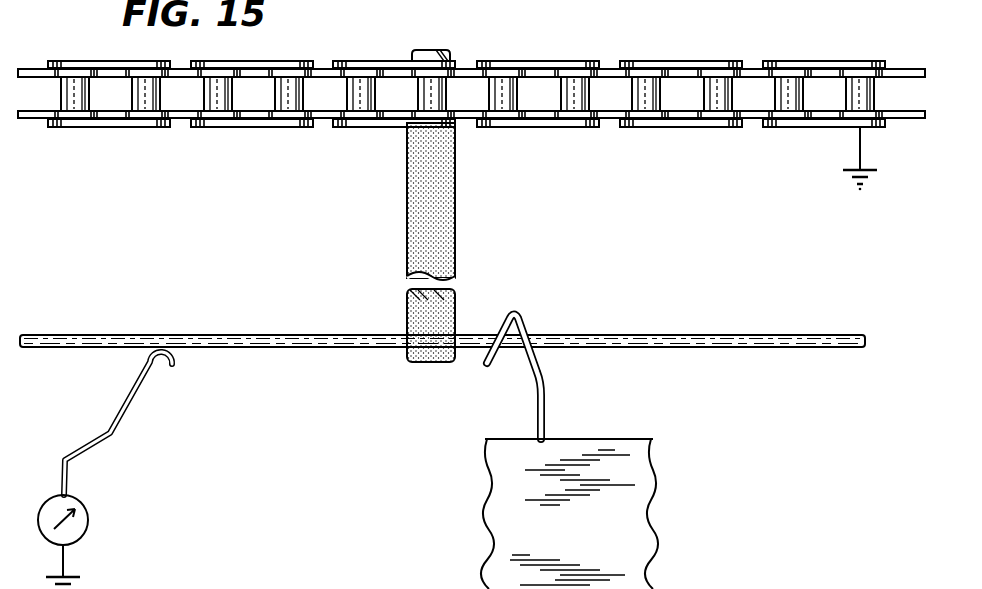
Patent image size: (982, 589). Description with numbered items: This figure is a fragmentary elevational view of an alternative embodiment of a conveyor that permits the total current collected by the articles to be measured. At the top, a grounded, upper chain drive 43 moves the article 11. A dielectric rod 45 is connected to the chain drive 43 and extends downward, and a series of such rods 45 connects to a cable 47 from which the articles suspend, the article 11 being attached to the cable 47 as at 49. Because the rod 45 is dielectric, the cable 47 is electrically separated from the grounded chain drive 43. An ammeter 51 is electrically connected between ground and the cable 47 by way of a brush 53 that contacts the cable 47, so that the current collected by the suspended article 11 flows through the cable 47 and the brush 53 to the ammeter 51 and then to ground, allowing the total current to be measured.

The chain drive 43 is at (637, 60).
The dielectric rod 45 is at (456, 189).
The cable 47 is at (721, 334).
The attachment 49 is at (531, 322).
The brush 53 is at (145, 391).
The ammeter 51 is at (97, 518).
The article 11 is at (497, 480).